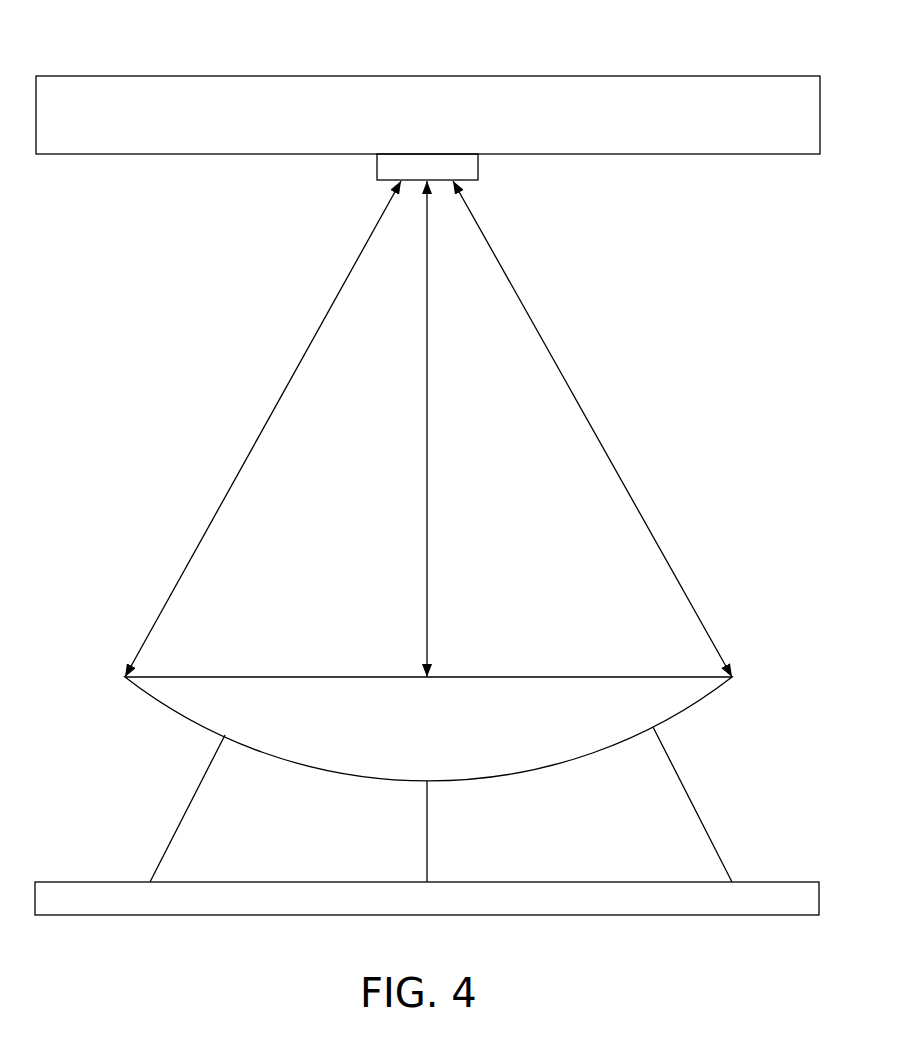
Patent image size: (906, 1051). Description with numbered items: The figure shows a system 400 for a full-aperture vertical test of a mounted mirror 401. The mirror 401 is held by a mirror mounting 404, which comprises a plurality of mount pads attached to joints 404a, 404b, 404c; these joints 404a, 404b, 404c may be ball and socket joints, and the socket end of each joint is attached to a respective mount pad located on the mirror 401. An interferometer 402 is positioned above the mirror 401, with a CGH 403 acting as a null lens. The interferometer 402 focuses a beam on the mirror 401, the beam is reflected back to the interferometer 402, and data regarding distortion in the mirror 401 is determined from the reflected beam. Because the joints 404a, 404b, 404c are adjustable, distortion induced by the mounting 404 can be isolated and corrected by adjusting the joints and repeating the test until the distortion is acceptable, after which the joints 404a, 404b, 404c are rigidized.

The system for a full-aperture vertical test 400 is at (426, 465).
The mirror 401 is at (428, 729).
The interferometer 402 is at (428, 115).
The CGH 403 is at (427, 167).
The mirror mounting 404 is at (122, 831).
The joint 404a is at (194, 808).
The joint 404b is at (451, 831).
The joint 404c is at (683, 804).